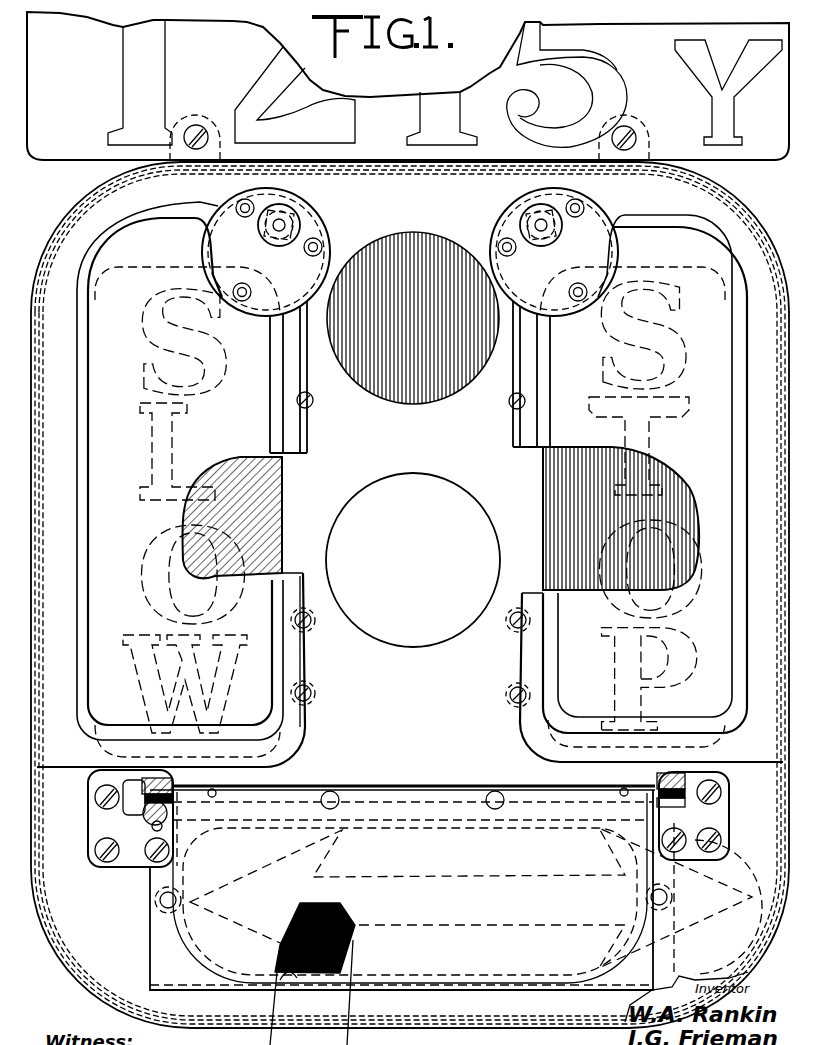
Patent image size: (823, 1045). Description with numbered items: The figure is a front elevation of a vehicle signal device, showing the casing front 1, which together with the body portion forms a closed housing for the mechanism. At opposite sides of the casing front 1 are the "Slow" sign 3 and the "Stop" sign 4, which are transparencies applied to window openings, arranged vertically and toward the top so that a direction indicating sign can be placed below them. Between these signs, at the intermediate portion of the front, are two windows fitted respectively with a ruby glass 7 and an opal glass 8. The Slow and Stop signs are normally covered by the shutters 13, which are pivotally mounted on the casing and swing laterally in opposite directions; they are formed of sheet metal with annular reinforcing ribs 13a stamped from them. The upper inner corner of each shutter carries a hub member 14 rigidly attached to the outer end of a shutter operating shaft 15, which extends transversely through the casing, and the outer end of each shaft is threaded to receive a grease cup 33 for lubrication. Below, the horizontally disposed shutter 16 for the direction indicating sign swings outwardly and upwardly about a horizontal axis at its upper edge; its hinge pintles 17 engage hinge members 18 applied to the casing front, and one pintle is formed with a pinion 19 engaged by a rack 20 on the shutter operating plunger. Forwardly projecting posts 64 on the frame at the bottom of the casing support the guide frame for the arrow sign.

The casing front 1 is at (410, 595).
The "Slow" sign 3 is at (260, 507).
The "Stop" sign 4 is at (548, 503).
The ruby glass 7 is at (390, 378).
The opal glass 8 is at (362, 503).
The shutter 13 is at (383, 377).
The annular reinforcing rib 13a is at (273, 655).
The hub member 14 is at (300, 212).
The shutter operating shaft 15 is at (278, 247).
The shutter for the direction indicating sign 16 is at (200, 918).
The hinge pintle 17 is at (133, 785).
The hinge member 18 is at (97, 816).
The pinion 19 is at (97, 818).
The rack 20 is at (152, 827).
The grease cup 33 is at (290, 226).
The forwardly projecting post 64 is at (190, 897).